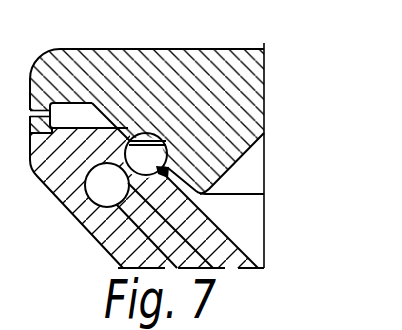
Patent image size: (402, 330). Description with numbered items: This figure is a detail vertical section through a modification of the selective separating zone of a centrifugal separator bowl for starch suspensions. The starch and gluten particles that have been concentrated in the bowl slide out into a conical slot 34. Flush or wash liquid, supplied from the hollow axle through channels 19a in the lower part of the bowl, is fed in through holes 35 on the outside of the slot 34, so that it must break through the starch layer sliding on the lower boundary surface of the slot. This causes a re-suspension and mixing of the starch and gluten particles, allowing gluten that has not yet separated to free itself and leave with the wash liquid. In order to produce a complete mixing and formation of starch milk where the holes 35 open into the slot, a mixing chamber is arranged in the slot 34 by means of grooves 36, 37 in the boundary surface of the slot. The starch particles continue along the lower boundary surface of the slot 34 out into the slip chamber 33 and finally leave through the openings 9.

The openings 9 is at (30, 113).
The channels 19a is at (148, 224).
The slip chamber 33 is at (72, 113).
The conical slot 34 is at (180, 178).
The holes 35 is at (91, 204).
The groove 36 is at (129, 141).
The groove 37 is at (156, 133).